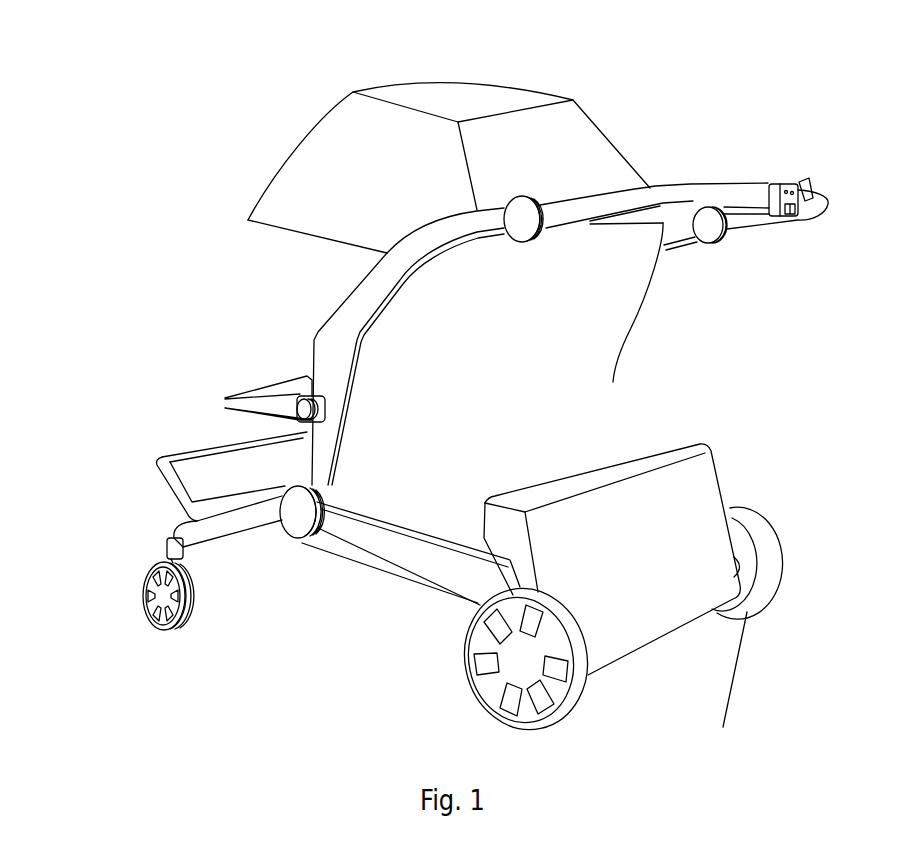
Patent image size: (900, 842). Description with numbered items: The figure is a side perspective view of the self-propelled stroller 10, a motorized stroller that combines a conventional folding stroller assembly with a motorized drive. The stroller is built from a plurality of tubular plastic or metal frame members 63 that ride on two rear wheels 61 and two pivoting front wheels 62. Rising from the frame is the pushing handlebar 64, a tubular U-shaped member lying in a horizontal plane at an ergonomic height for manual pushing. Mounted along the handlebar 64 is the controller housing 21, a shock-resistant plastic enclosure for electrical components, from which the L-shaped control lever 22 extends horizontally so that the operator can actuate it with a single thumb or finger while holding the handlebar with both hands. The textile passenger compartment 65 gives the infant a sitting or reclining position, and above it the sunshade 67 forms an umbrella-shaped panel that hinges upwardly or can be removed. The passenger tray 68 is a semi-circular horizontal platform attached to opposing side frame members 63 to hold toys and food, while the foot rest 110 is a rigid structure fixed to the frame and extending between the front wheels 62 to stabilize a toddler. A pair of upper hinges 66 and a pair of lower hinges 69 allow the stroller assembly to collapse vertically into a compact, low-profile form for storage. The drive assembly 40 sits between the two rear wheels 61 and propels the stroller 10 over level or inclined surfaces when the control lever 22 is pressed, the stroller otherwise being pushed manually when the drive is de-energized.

The self-propelled stroller 10 is at (115, 189).
The controller housing 21 is at (783, 184).
The control lever 22 is at (813, 184).
The drive assembly 40 is at (730, 462).
The rear wheels 61 is at (572, 712).
The pivoting front wheels 62 is at (147, 577).
The frame members 63 is at (238, 500).
The pushing handlebar 64 is at (745, 223).
The passenger compartment 65 is at (615, 380).
The upper hinges 66 is at (712, 232).
The sunshade 67 is at (570, 128).
The passenger tray 68 is at (268, 388).
The lower hinges 69 is at (300, 538).
The foot rest 110 is at (166, 492).